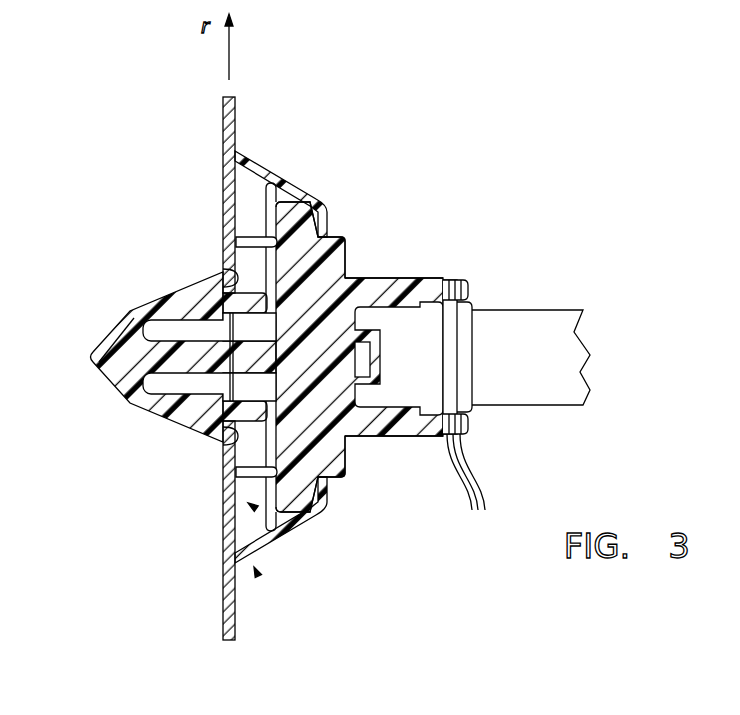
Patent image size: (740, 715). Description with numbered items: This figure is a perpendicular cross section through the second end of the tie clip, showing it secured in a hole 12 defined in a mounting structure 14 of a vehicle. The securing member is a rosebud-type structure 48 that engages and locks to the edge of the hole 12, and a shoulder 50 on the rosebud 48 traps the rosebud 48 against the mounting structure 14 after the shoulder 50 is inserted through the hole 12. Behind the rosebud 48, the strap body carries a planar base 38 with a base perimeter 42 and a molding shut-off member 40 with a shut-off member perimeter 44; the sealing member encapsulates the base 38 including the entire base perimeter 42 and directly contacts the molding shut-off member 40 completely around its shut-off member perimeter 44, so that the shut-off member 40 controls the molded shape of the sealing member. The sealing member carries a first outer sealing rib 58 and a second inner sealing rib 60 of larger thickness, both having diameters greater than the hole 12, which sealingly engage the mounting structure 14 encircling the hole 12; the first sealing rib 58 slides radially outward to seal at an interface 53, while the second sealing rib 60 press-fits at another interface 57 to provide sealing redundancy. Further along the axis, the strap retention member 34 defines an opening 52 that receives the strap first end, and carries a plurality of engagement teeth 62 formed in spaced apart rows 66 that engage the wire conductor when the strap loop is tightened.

The hole 12 is at (220, 417).
The mounting structure 14 is at (225, 610).
The strap retention member 34 is at (405, 278).
The planar base 38 is at (272, 267).
The molding shut-off member 40 is at (348, 253).
The base perimeter 42 is at (290, 200).
The shut-off member perimeter 44 is at (335, 237).
The rosebud-type structure 48 is at (125, 376).
The shoulder 50 is at (223, 268).
The opening 52 is at (440, 348).
The interface 53 is at (257, 574).
The interface 57 is at (252, 506).
The first outer sealing rib 58 is at (243, 153).
The second inner sealing rib 60 is at (253, 236).
The engagement teeth 62 is at (468, 484).
The spaced apart rows 66 is at (462, 281).